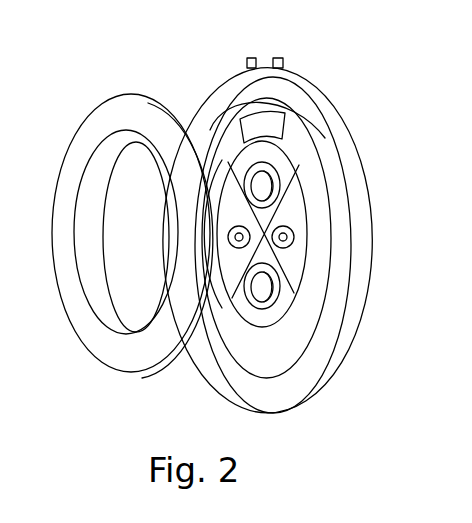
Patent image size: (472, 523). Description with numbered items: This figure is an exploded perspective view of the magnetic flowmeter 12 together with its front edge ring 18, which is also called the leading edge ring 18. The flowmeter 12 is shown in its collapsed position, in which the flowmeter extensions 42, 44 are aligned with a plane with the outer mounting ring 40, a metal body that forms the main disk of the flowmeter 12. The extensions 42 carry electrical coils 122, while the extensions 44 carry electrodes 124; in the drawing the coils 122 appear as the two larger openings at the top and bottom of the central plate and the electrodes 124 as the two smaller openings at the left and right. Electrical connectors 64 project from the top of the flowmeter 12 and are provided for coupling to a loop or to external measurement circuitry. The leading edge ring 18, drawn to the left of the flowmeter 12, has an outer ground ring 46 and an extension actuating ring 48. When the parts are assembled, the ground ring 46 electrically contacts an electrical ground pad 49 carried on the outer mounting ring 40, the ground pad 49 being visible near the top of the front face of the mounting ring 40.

The magnetic flowmeter 12 is at (333, 104).
The front edge ring 18 is at (80, 128).
The outer mounting ring 40 is at (311, 85).
The flowmeter extensions 42 is at (285, 158).
The flowmeter extensions 44 is at (232, 211).
The outer ground ring 46 is at (82, 312).
The extension actuating ring 48 is at (100, 172).
The electrical ground pad 49 is at (278, 118).
The electrical connectors 64 is at (251, 58).
The electrical coils 122 is at (243, 177).
The electrodes 124 is at (238, 237).